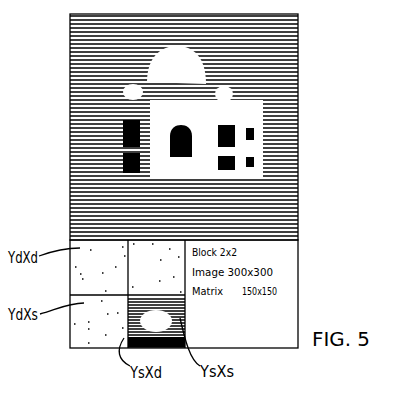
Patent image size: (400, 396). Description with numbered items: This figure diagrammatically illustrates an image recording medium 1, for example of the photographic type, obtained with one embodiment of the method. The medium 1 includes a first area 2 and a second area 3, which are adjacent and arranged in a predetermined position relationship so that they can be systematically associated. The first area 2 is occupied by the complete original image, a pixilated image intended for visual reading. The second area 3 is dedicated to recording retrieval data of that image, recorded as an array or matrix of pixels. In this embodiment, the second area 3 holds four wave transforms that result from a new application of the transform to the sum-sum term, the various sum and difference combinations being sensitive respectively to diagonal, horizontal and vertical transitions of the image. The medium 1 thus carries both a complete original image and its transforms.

The image recording medium 1 is at (303, 237).
The first area 2 is at (57, 14).
The second area 3 is at (57, 347).